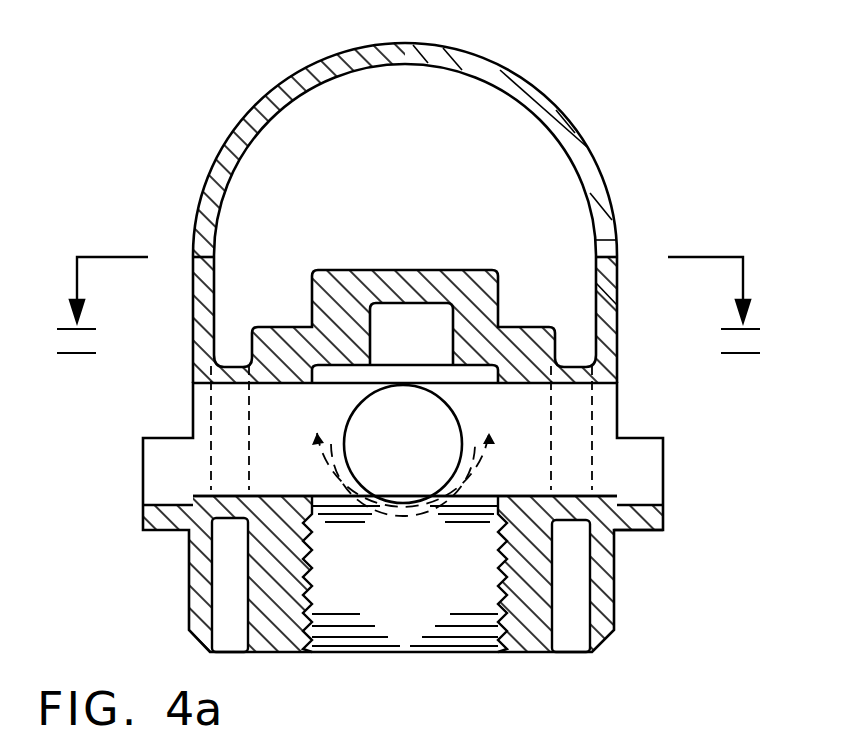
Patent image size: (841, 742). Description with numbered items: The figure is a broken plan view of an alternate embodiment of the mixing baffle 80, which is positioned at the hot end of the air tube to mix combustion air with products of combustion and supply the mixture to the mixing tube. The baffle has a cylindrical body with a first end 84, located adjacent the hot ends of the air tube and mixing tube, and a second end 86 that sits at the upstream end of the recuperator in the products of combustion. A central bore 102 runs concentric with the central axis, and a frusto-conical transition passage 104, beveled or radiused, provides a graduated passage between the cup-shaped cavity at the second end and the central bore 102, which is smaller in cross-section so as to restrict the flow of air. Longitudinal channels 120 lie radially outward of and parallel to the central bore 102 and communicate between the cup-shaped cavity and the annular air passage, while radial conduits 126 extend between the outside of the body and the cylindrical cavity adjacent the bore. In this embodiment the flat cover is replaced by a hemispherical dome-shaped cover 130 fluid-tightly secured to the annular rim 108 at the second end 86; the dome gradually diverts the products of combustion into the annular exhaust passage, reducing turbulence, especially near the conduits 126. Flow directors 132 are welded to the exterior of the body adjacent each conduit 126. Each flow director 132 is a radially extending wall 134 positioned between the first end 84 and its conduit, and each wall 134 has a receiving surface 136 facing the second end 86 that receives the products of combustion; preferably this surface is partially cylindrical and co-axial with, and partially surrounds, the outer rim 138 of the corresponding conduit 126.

The mixing baffle 80 is at (223, 122).
The dome-shaped cover 130 is at (573, 128).
The annular rim 108 is at (612, 245).
The second end 86 is at (617, 287).
The frusto-conical transition passage 104 is at (363, 283).
The central bore 102 is at (435, 313).
The radial bore or conduit 126 is at (407, 408).
The outer rim 138 is at (462, 427).
The longitudinal channel 120 is at (205, 416).
The radially extending wall 134 is at (144, 492).
The flow director 132 is at (144, 472).
The receiving surface 136 is at (641, 533).
The first end 84 is at (613, 600).